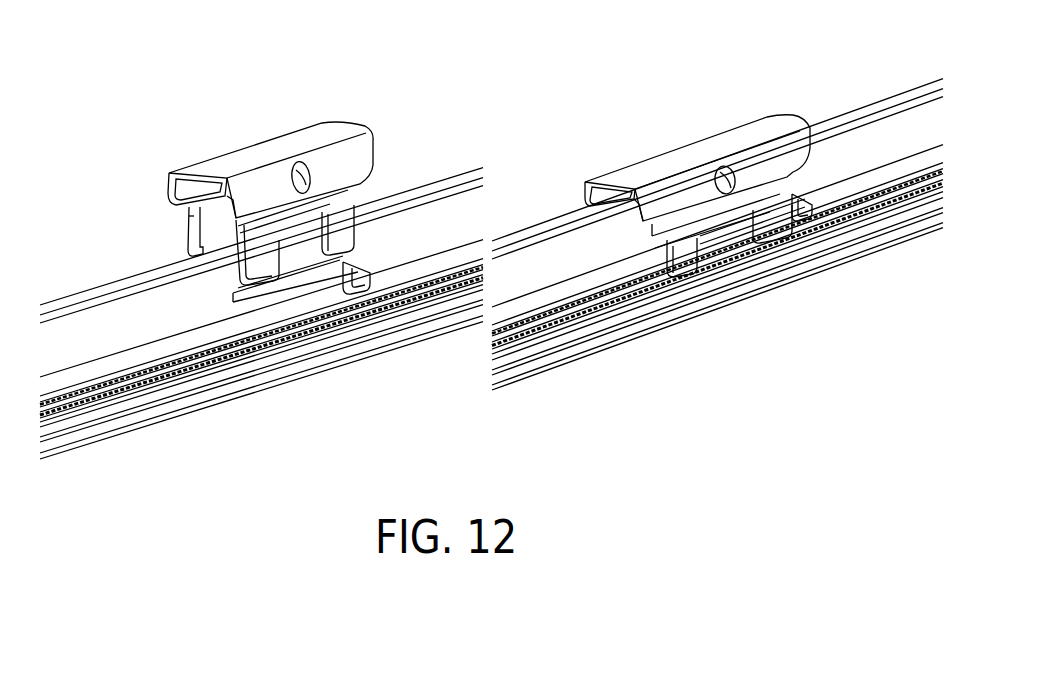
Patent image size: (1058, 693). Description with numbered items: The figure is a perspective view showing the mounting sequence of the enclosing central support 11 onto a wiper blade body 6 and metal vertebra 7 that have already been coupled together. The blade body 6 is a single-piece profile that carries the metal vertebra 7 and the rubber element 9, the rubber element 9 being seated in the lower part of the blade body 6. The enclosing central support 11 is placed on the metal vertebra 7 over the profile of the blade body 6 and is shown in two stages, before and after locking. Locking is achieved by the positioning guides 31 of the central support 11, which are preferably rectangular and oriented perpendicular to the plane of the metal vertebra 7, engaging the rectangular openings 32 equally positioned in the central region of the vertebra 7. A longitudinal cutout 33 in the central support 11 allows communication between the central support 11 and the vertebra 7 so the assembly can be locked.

The blade body 6 is at (118, 307).
The metal vertebra 7 is at (340, 290).
The rubber element 9 is at (143, 403).
The enclosing central support 11 is at (330, 128).
The positioning guides 31 is at (345, 237).
The rectangular openings 32 is at (707, 253).
The longitudinal cutout 33 is at (360, 278).